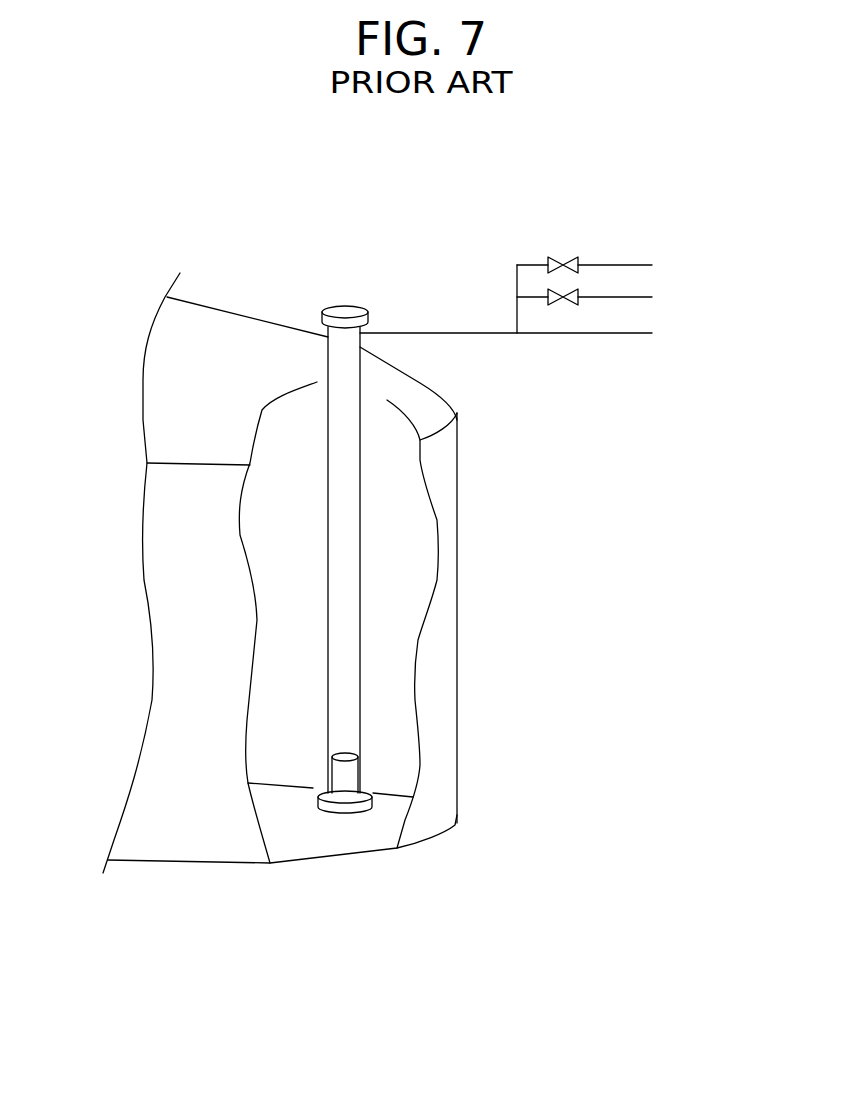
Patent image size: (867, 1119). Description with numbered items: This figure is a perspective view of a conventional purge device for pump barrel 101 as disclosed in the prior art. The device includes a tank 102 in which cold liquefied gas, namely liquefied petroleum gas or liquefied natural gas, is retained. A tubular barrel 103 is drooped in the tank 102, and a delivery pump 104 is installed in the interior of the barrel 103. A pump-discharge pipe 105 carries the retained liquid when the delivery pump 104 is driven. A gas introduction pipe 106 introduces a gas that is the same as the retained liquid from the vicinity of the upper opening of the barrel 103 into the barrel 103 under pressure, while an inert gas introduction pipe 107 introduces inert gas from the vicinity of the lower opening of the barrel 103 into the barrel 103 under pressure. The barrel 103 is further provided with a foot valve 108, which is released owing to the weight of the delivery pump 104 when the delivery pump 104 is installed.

The purge device for pump barrel 101 is at (575, 232).
The tank 102 is at (268, 296).
The barrel 103 is at (360, 578).
The delivery pump 104 is at (348, 773).
The pump-discharge pipe 105 is at (618, 333).
The gas introduction pipe 106 is at (618, 265).
The inert gas introduction pipe 107 is at (618, 297).
The foot valve 108 is at (347, 817).